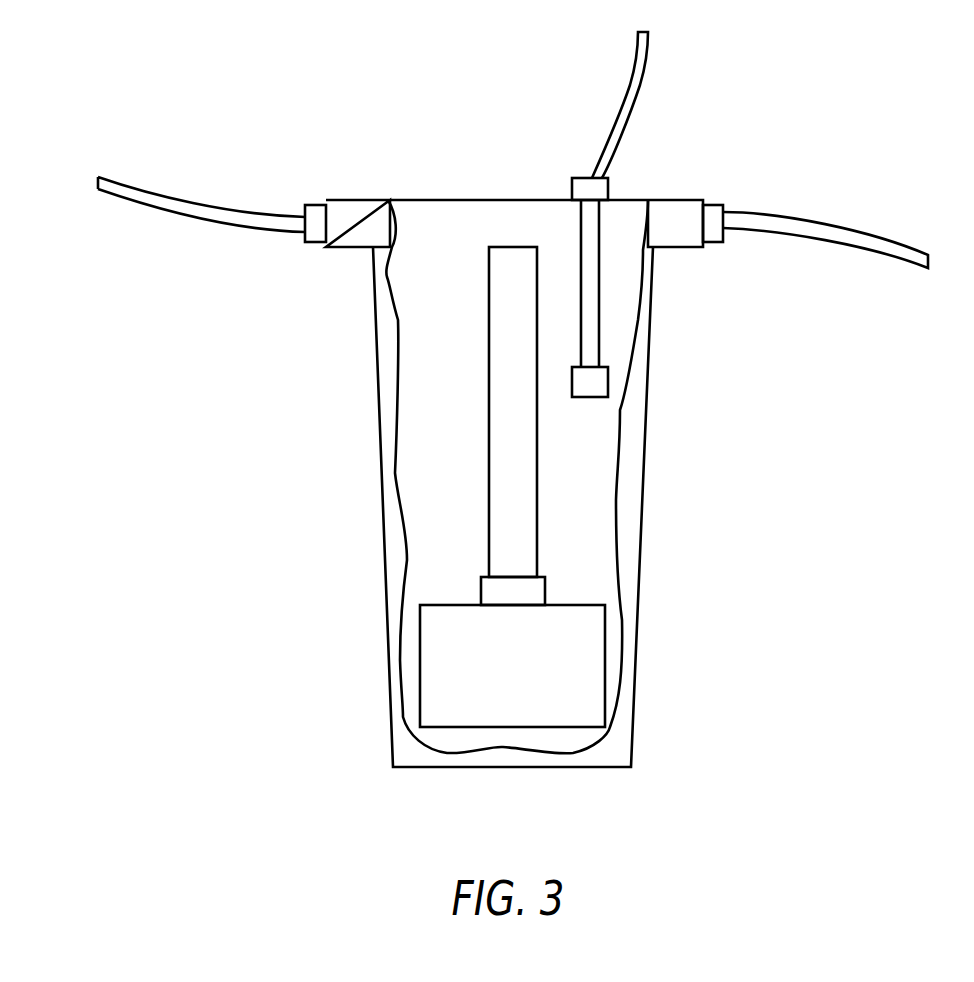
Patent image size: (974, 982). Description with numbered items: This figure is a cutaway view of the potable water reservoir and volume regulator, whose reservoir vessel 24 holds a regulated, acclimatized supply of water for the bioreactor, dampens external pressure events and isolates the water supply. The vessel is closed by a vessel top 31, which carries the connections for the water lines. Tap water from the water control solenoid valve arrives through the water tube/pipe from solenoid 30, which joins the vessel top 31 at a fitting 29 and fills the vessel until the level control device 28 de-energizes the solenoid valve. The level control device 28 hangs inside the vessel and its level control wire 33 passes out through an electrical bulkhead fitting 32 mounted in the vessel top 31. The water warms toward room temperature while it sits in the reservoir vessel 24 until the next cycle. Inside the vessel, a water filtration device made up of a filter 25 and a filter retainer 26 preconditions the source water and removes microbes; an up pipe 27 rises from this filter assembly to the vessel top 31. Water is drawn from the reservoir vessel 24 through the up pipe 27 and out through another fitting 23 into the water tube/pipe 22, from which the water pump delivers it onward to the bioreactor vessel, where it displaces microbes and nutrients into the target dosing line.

The water tube/pipe 22 is at (207, 220).
The fitting 23 is at (307, 243).
The reservoir vessel 24 is at (372, 468).
The filter 25 is at (418, 668).
The filter retainer 26 is at (532, 593).
The up pipe 27 is at (513, 513).
The level control device 28 is at (595, 382).
The fitting 29 is at (715, 243).
The water tube/pipe from solenoid 30 is at (893, 257).
The vessel top 31 is at (667, 198).
The electrical bulkhead fitting 32 is at (601, 183).
The level control wire 33 is at (648, 53).